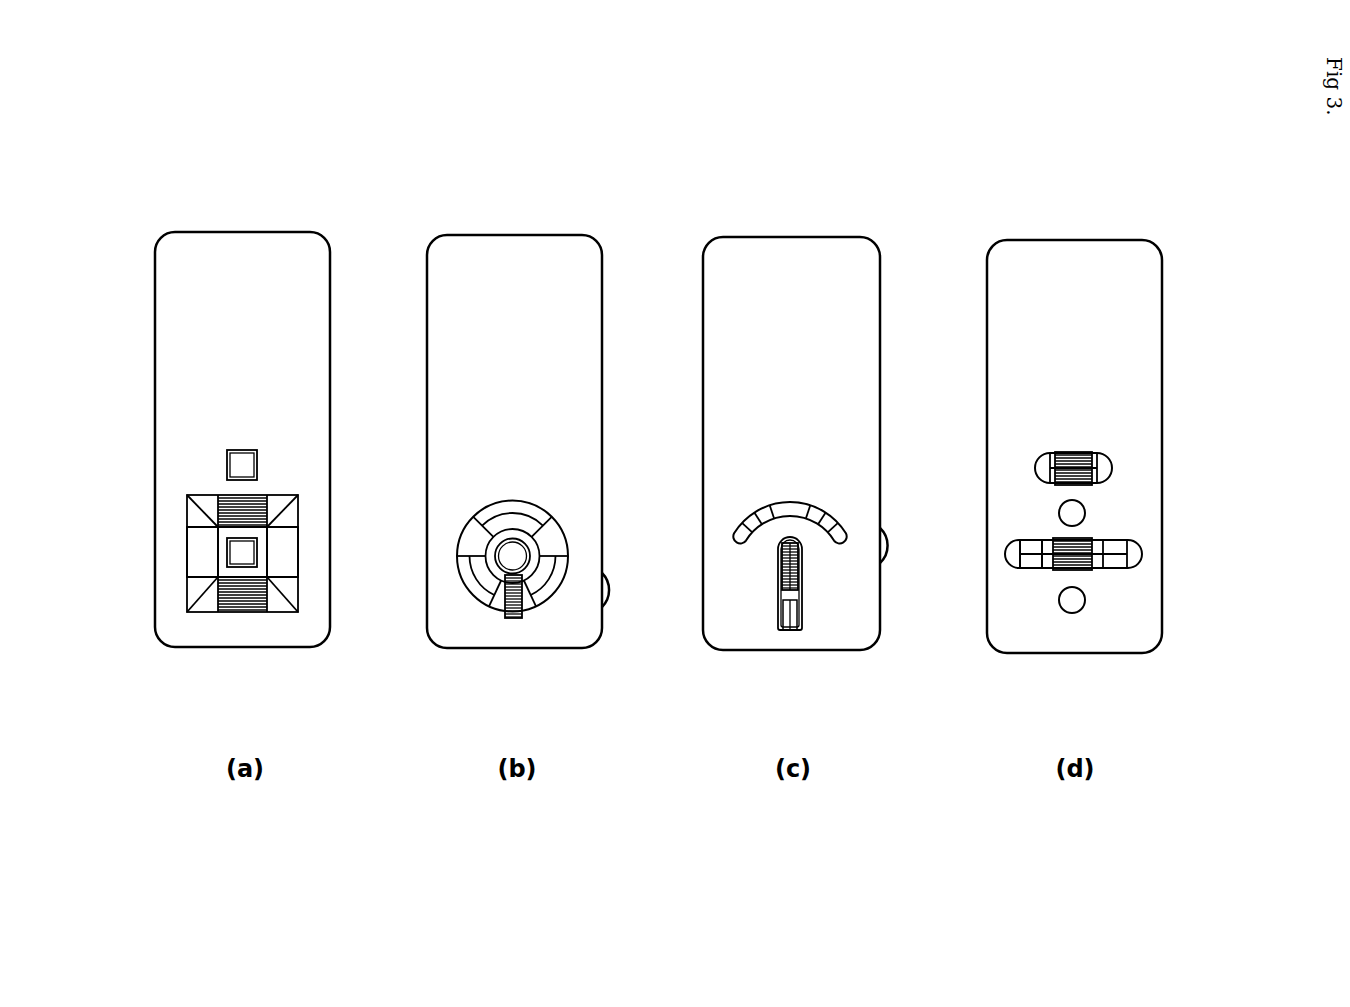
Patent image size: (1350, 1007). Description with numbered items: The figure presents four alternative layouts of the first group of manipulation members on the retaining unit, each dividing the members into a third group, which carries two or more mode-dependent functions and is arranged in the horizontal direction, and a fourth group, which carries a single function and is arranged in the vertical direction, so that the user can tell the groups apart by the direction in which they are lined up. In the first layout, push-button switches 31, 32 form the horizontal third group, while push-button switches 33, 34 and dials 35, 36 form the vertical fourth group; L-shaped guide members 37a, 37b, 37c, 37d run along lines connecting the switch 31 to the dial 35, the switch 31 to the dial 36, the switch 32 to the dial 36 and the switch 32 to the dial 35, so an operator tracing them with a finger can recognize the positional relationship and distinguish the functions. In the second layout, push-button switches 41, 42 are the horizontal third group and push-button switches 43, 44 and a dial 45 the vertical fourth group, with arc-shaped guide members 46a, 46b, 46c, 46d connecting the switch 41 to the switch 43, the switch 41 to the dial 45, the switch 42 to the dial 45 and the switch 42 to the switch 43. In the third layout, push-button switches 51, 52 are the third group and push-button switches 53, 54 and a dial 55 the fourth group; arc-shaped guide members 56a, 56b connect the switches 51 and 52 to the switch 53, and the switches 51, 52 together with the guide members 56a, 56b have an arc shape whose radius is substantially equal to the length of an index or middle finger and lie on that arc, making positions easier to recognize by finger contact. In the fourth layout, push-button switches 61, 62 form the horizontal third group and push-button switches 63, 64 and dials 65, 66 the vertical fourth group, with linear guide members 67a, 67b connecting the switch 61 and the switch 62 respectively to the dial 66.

The push-button switch 31 is at (197, 557).
The push-button switch 32 is at (290, 555).
The push-button switch 33 is at (247, 458).
The push-button switch 34 is at (246, 552).
The dial 35 is at (257, 503).
The dial 36 is at (247, 600).
The guide member 37a is at (193, 515).
The guide member 37b is at (207, 603).
The guide member 37c is at (288, 590).
The guide member 37d is at (282, 502).
The push-button switch 41 is at (472, 593).
The push-button switch 42 is at (560, 577).
The push-button switch 43 is at (518, 507).
The push-button switch 44 is at (518, 552).
The dial 45 is at (515, 618).
The guide member 46a is at (475, 527).
The guide member 46b is at (498, 603).
The guide member 46c is at (533, 605).
The guide member 46d is at (552, 512).
The push-button switch 51 is at (742, 517).
The push-button switch 52 is at (837, 515).
The push-button switch 53 is at (790, 500).
The push-button switch 54 is at (793, 617).
The dial 55 is at (783, 568).
The guide member 56a is at (758, 512).
The guide member 56b is at (818, 508).
The push-button switch 61 is at (1032, 563).
The push-button switch 62 is at (1117, 543).
The push-button switch 63 is at (1080, 515).
The push-button switch 64 is at (1072, 612).
The dial 65 is at (1077, 452).
The dial 66 is at (1083, 567).
The guide member 67a is at (1048, 567).
The guide member 67b is at (1083, 563).